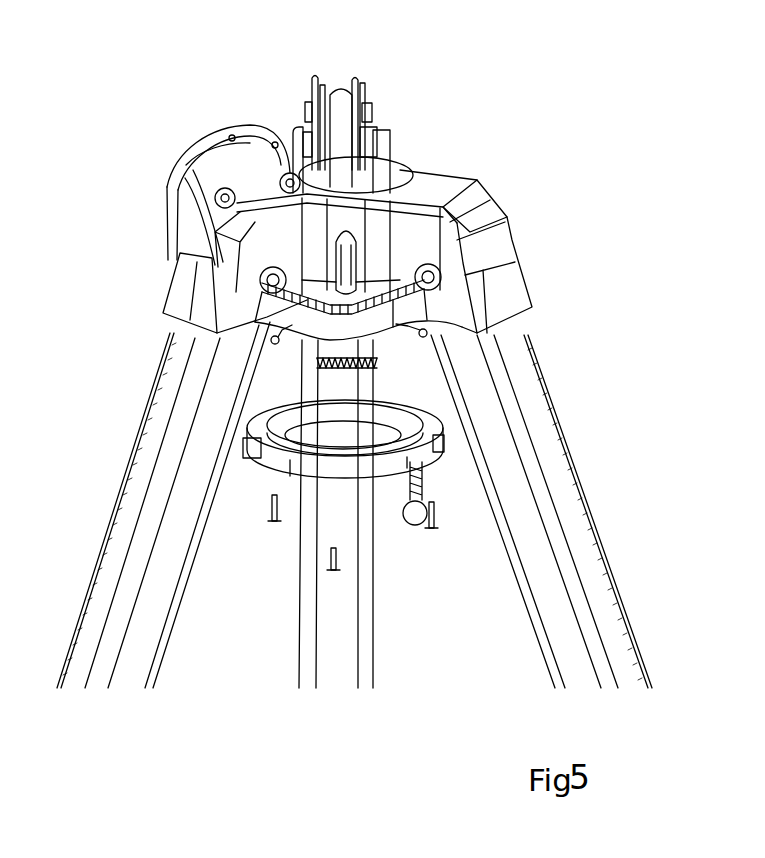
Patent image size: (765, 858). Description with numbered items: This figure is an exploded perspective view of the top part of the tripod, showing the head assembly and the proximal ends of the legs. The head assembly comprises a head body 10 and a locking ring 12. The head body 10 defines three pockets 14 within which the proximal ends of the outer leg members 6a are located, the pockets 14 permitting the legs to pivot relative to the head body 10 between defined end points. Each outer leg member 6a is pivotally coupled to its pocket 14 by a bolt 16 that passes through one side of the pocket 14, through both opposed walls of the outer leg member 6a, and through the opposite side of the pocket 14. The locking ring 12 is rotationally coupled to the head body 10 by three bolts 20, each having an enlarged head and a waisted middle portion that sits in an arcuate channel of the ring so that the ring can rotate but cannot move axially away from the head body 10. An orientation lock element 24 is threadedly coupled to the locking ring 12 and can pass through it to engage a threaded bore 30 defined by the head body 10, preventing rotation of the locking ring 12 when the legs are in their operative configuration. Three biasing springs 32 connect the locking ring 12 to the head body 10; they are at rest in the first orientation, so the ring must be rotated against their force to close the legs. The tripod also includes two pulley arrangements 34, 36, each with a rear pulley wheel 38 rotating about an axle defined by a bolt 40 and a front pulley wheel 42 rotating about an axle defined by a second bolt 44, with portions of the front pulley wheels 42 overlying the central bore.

The head body 10 is at (480, 198).
The locking ring 12 is at (247, 447).
The pocket 14 is at (180, 302).
The bolt 16 is at (260, 277).
The bolt 20 is at (270, 508).
The orientation lock element 24 is at (405, 525).
The threaded bore 30 is at (193, 172).
The biasing spring 32 is at (273, 344).
The pulley arrangement 34 is at (215, 135).
The pulley arrangement 36 is at (363, 92).
The rear pulley wheel 38 is at (340, 88).
The bolt 40 is at (374, 110).
The front pulley wheel 42 is at (342, 148).
The second bolt 44 is at (290, 173).
The outer leg member 6a is at (150, 635).